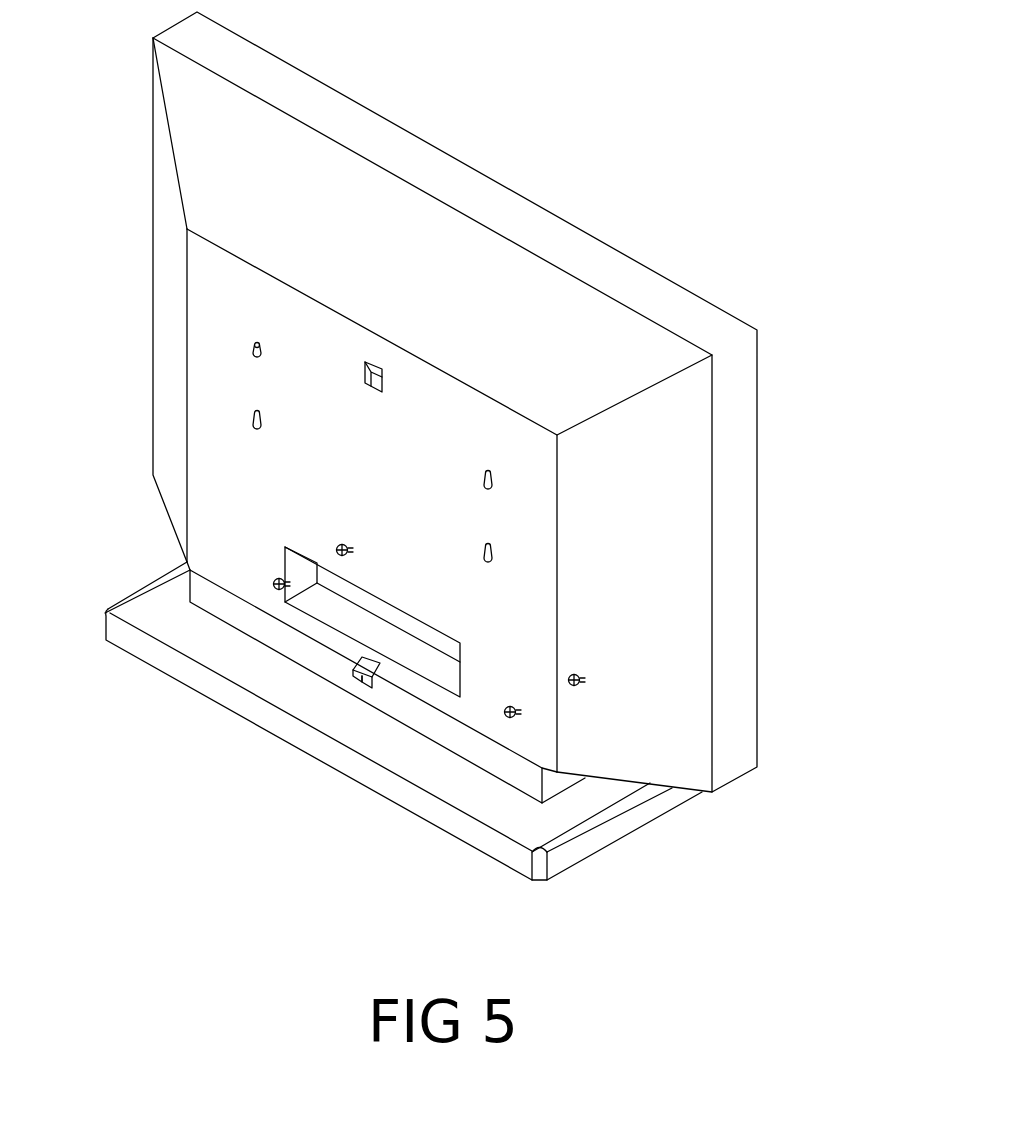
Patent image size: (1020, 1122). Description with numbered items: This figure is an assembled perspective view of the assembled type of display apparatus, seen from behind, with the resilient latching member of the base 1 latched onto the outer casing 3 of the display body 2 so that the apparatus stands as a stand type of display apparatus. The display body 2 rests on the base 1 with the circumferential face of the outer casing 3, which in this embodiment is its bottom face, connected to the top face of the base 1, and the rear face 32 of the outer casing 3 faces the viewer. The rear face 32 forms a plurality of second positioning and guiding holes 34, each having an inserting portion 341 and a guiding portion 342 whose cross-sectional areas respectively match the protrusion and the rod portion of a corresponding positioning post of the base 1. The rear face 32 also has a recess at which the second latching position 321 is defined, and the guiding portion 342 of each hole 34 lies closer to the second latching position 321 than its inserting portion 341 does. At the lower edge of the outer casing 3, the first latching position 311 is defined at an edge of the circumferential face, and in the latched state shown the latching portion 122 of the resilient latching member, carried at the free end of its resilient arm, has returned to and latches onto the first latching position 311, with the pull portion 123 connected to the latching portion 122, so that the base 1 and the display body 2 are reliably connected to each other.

The base 1 is at (478, 862).
The display body 2 is at (790, 420).
The outer casing 3 is at (757, 600).
The rear face 32 is at (212, 522).
The second latching position 321 is at (376, 362).
The second positioning and guiding hole 34 is at (145, 319).
The inserting portion 341 is at (253, 351).
The guiding portion 342 is at (253, 343).
The first latching position 311 is at (372, 682).
The latching portion 122 is at (379, 680).
The pull portion 123 is at (352, 671).